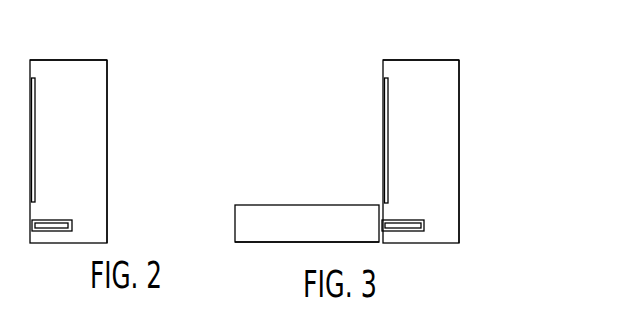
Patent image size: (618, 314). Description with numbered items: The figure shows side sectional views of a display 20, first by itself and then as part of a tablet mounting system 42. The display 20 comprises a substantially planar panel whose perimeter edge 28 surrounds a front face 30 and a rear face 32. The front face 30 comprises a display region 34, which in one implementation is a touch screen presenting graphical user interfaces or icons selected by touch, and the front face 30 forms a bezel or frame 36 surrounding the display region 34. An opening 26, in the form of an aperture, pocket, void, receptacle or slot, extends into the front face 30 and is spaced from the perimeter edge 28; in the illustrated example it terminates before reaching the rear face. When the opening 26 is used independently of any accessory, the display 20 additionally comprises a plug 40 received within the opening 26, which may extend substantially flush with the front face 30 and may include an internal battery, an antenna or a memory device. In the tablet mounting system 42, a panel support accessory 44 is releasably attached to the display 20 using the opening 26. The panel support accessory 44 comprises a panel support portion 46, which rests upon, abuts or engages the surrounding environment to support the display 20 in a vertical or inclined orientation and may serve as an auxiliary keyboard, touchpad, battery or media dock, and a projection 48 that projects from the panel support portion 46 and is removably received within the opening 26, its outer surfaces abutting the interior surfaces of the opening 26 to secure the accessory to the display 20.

In FIG. 2, the display 20 is at (146, 62).
In FIG. 3, the display 20 is at (463, 60).
In FIG. 2, the opening 26 is at (43, 229).
In FIG. 3, the opening 26 is at (392, 220).
In FIG. 3, the perimeter edge 28 is at (418, 73).
In FIG. 2, the front face 30 is at (53, 112).
In FIG. 3, the front face 30 is at (383, 120).
In FIG. 2, the rear face 32 is at (111, 152).
In FIG. 3, the rear face 32 is at (463, 137).
In FIG. 2, the display region 34 is at (32, 125).
In FIG. 3, the display region 34 is at (382, 127).
In FIG. 2, the bezel or frame 36 is at (24, 65).
In FIG. 3, the bezel or frame 36 is at (380, 75).
In FIG. 2, the plug 40 is at (35, 231).
In FIG. 3, the tablet mounting system 42 is at (368, 175).
In FIG. 3, the panel support accessory 44 is at (245, 202).
In FIG. 3, the panel support portion 46 is at (272, 243).
In FIG. 3, the projection 48 is at (400, 231).